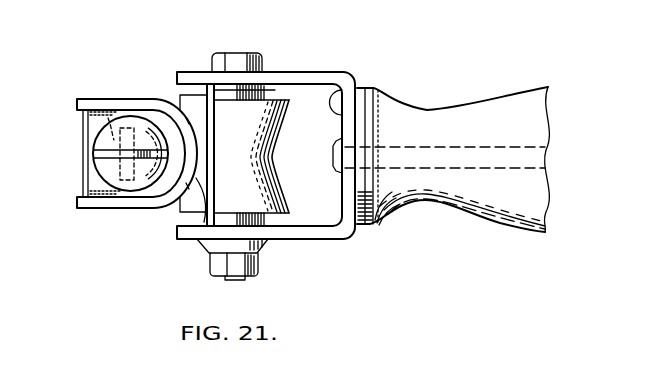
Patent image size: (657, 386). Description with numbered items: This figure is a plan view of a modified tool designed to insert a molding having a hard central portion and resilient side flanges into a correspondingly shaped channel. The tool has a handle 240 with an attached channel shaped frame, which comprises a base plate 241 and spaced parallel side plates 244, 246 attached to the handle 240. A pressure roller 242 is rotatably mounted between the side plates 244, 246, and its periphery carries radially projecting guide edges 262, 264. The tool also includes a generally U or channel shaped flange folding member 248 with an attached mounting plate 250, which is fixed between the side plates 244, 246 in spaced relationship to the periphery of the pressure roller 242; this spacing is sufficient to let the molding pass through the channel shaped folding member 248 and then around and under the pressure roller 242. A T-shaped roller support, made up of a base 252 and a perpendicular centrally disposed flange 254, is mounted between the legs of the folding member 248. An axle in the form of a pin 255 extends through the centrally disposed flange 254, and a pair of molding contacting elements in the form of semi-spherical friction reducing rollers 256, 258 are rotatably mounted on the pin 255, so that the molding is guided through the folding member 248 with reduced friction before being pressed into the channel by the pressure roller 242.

The handle 240 is at (512, 87).
The base plate 241 is at (330, 92).
The pressure roller 242 is at (345, 236).
The side plate 244 is at (283, 240).
The side plate 246 is at (287, 72).
The flange folding member 248 is at (155, 97).
The mounting plate 250 is at (194, 196).
The base 252 is at (83, 124).
The centrally disposed flange 254 is at (115, 146).
The pin 255 is at (108, 118).
The semi-spherical friction reducing roller 256 is at (83, 113).
The semi-spherical friction reducing roller 258 is at (100, 180).
The guide edge 262 is at (296, 103).
The guide edge 264 is at (290, 193).